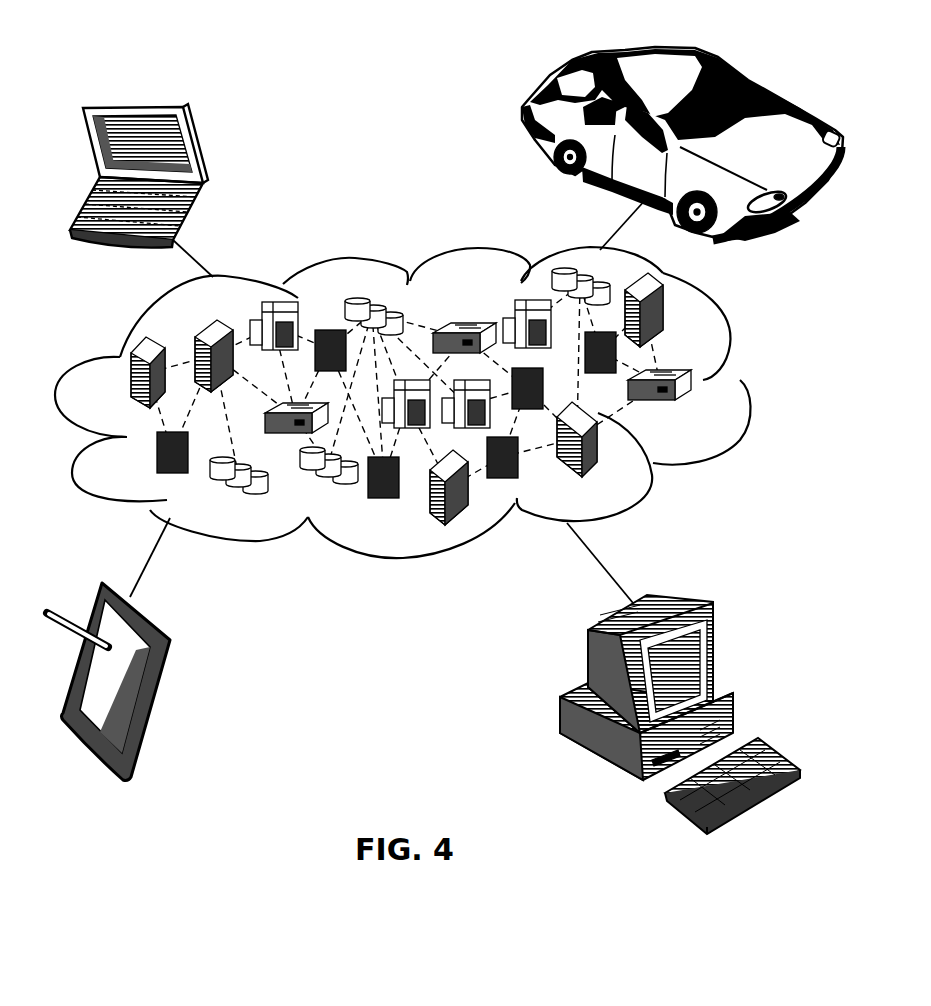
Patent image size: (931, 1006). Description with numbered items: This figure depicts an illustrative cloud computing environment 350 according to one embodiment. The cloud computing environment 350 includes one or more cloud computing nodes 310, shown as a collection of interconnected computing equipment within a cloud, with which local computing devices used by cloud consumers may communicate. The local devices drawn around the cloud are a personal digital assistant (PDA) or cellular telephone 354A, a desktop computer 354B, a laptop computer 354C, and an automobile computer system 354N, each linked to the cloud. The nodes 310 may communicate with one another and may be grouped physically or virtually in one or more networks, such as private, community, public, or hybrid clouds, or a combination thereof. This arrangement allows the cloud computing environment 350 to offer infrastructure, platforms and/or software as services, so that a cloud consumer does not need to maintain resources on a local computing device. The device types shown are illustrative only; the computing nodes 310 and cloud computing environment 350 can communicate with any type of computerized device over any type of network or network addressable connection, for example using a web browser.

The cloud computing environment 350 is at (742, 385).
The cloud computing nodes 310 is at (708, 412).
The personal digital assistant (PDA) or cellular telephone 354A is at (167, 670).
The desktop computer 354B is at (685, 593).
The laptop computer 354C is at (197, 150).
The automobile computer system 354N is at (528, 120).